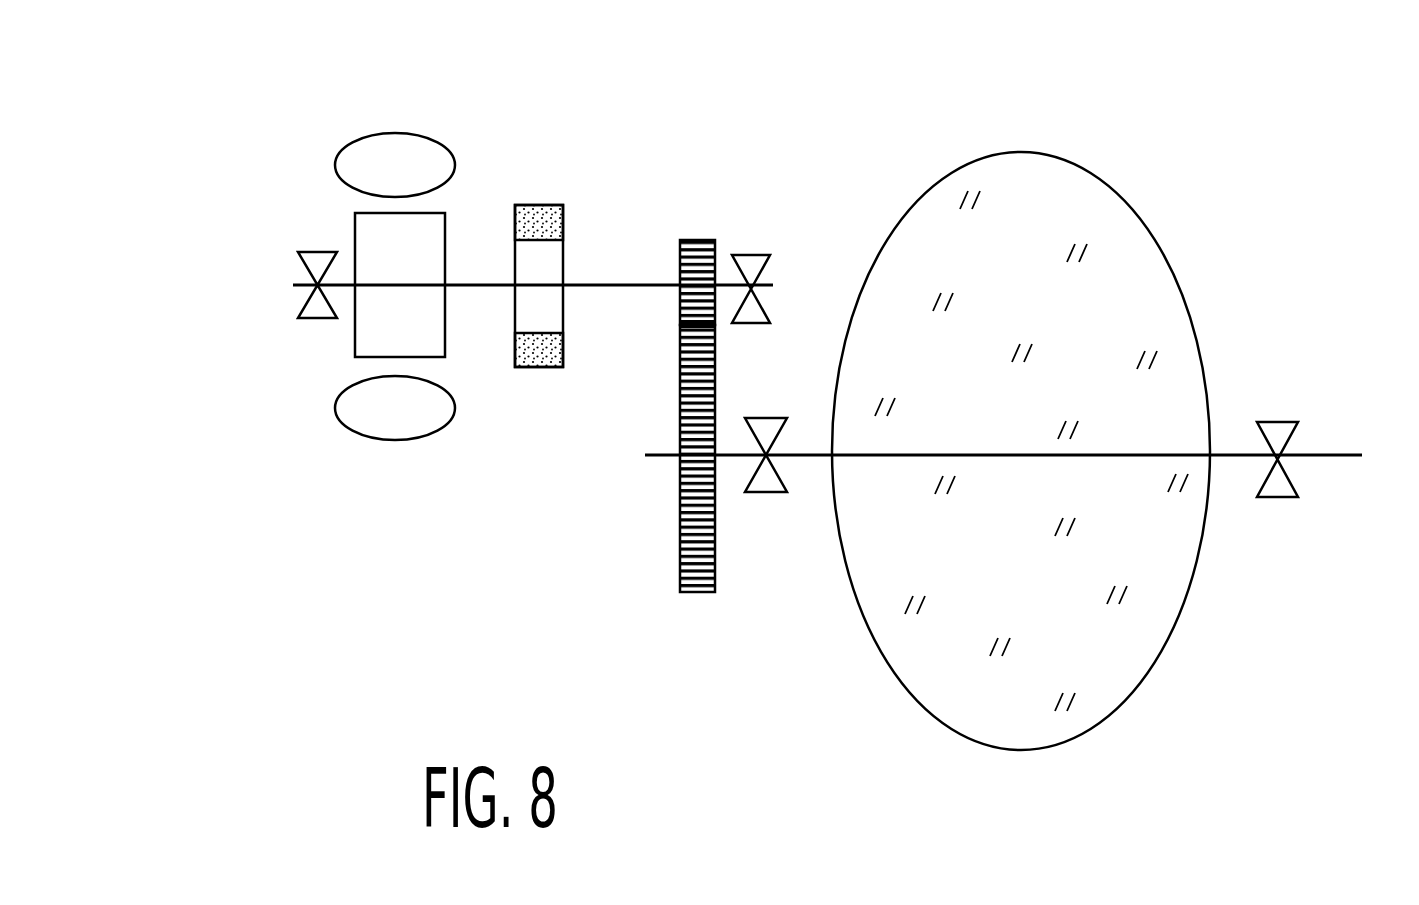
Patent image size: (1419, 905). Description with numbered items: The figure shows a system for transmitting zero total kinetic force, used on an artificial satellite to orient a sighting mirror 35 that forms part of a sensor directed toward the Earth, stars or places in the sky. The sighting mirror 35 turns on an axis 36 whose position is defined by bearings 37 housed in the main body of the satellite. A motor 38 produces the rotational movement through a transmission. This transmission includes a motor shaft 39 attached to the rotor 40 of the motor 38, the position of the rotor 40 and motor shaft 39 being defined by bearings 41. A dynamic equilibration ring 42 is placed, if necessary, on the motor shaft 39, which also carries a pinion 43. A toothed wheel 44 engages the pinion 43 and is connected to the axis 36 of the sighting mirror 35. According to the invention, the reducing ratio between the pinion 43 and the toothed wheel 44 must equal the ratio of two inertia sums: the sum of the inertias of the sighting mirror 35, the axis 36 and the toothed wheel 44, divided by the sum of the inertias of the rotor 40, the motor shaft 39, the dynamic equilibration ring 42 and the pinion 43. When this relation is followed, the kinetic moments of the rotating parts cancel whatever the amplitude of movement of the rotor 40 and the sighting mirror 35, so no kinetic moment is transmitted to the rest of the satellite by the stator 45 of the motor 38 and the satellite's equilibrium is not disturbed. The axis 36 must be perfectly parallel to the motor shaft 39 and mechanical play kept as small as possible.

The sighting mirror 35 is at (1150, 250).
The axis 36 is at (1232, 455).
The bearings 37 is at (770, 487).
The motor 38 is at (310, 385).
The motor shaft 39 is at (607, 283).
The rotor 40 is at (358, 337).
The bearings 41 is at (318, 255).
The dynamic equilibration ring 42 is at (545, 368).
The pinion 43 is at (693, 242).
The toothed wheel 44 is at (685, 560).
The stator 45 is at (396, 143).